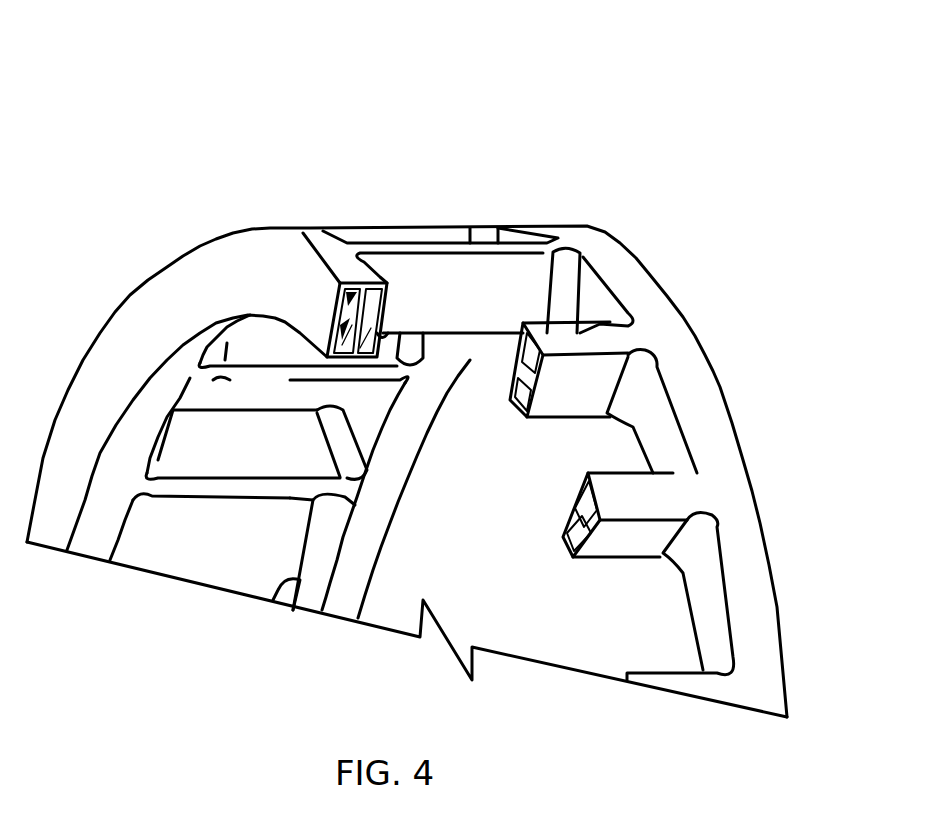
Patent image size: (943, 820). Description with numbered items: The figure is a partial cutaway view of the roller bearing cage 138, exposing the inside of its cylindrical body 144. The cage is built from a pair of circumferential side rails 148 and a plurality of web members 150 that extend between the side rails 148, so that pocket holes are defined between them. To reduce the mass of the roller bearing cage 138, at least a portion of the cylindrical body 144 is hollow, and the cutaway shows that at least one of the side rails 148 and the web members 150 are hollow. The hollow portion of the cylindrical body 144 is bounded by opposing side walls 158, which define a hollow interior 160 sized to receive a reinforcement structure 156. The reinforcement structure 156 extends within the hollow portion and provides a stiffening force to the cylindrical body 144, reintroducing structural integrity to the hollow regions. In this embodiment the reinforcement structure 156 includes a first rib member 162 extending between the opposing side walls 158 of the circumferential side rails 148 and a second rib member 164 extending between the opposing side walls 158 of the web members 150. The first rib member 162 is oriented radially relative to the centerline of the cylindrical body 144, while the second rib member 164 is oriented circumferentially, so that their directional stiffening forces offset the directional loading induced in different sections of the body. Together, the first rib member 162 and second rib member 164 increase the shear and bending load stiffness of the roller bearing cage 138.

The roller bearing cage 138 is at (640, 62).
The cylindrical body 144 is at (712, 268).
The circumferential side rails 148 is at (558, 236).
The web members 150 is at (593, 338).
The reinforcement structure 156 is at (337, 297).
The opposing side walls 158 is at (380, 360).
The hollow interior 160 is at (352, 340).
The first rib member 162 is at (356, 335).
The second rib member 164 is at (540, 381).